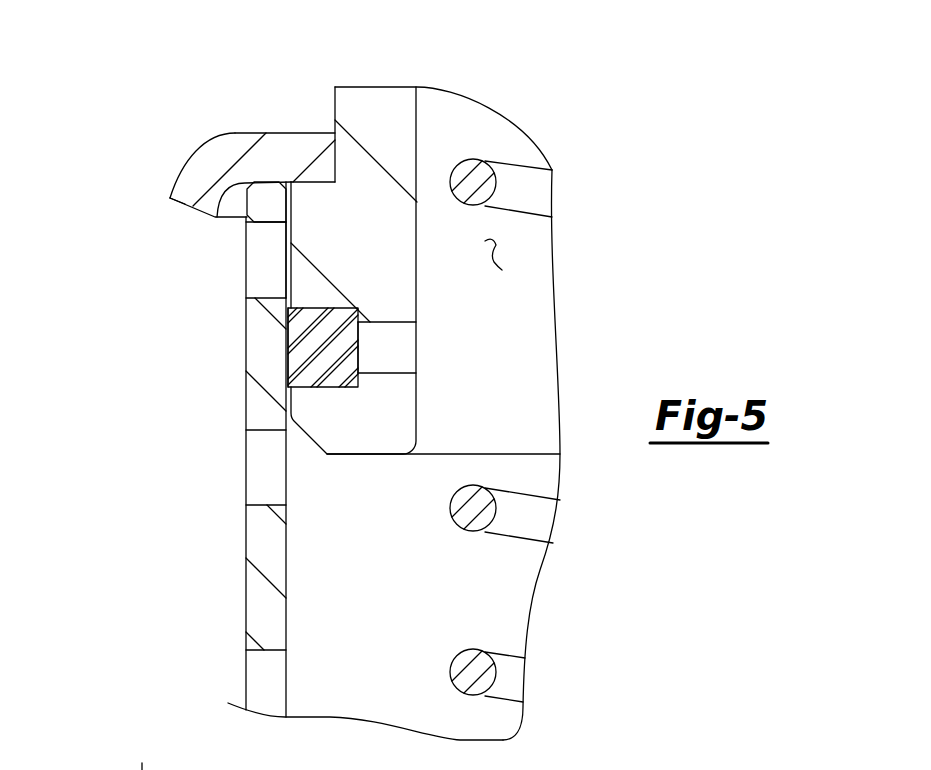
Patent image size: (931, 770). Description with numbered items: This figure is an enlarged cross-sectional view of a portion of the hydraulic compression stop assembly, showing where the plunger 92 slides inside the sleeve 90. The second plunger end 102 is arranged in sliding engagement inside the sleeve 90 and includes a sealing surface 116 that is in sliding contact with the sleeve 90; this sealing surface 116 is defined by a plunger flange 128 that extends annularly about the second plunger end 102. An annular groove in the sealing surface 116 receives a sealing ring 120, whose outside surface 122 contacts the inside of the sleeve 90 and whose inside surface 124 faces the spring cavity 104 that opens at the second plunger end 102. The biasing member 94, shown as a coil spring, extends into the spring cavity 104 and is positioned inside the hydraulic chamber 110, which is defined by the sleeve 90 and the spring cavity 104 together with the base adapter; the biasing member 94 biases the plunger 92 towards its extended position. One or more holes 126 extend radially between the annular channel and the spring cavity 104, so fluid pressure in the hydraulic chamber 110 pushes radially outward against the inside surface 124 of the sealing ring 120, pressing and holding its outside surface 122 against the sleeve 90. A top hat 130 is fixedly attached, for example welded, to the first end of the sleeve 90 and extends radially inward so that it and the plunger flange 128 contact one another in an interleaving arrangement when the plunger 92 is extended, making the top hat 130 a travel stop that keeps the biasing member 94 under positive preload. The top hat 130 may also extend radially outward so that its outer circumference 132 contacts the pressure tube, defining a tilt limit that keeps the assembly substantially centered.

The sleeve 90 is at (267, 545).
The plunger 92 is at (372, 104).
The biasing member 94 is at (463, 522).
The second plunger end 102 is at (362, 475).
The spring cavity 104 is at (500, 253).
The hydraulic chamber 110 is at (400, 676).
The sealing surface 116 is at (274, 264).
The sealing ring 120 is at (332, 367).
The outside surface 122 is at (272, 373).
The inside surface 124 is at (369, 364).
The holes 126 is at (402, 333).
The plunger flange 128 is at (333, 207).
The top hat 130 is at (220, 150).
The outer circumference 132 is at (159, 206).